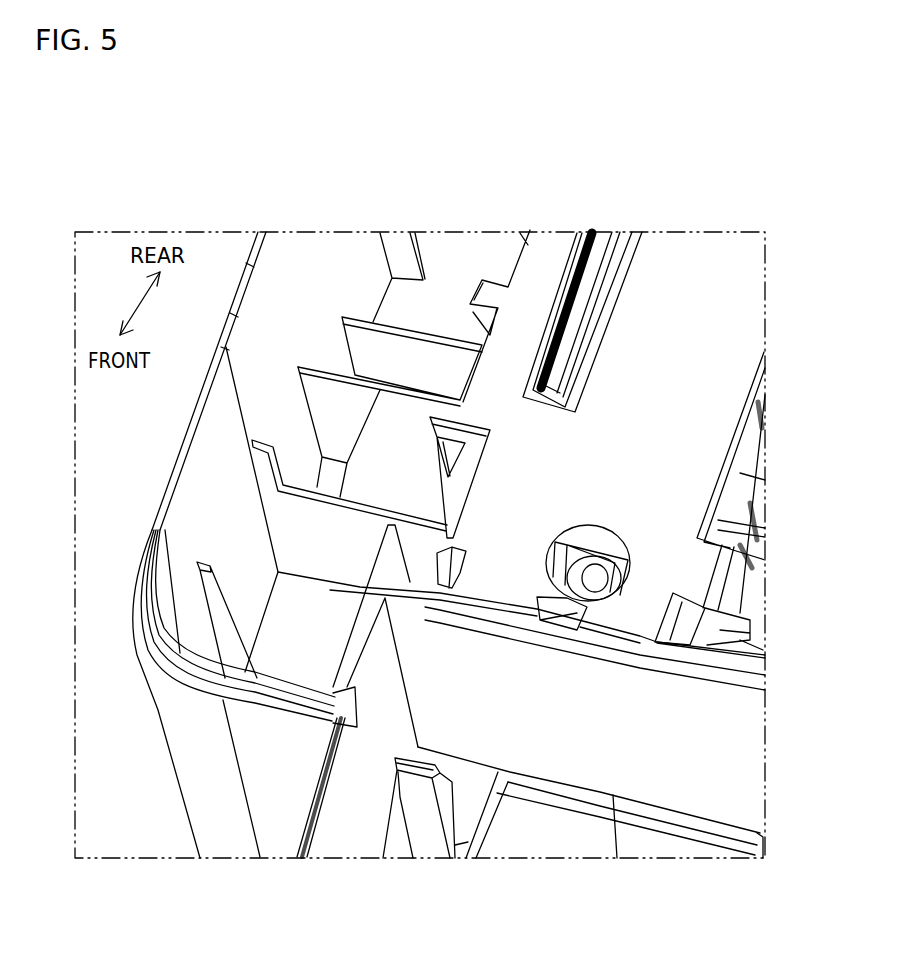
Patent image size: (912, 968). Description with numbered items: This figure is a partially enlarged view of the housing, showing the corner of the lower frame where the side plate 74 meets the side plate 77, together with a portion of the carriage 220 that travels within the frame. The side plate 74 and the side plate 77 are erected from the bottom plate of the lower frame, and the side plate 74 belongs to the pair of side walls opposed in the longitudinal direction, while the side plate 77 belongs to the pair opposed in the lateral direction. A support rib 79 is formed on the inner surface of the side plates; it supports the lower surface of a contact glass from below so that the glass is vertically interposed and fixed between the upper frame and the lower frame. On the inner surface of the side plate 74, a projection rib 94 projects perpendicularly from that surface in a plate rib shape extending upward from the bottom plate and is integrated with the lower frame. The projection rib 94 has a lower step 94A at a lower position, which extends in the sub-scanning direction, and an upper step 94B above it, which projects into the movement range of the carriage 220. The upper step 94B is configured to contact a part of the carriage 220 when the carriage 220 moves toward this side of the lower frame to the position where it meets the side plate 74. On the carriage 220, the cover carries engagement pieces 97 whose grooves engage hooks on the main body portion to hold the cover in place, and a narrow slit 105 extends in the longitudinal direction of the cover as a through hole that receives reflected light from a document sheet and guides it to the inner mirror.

The side plate 74 is at (250, 265).
The side plate 77 is at (224, 815).
The support rib 79 is at (202, 560).
The projection rib 94 is at (308, 532).
The lower step 94A is at (313, 483).
The upper step 94B is at (257, 443).
The engagement piece 97 is at (430, 440).
The slit 105 is at (587, 285).
The carriage 220 is at (688, 270).